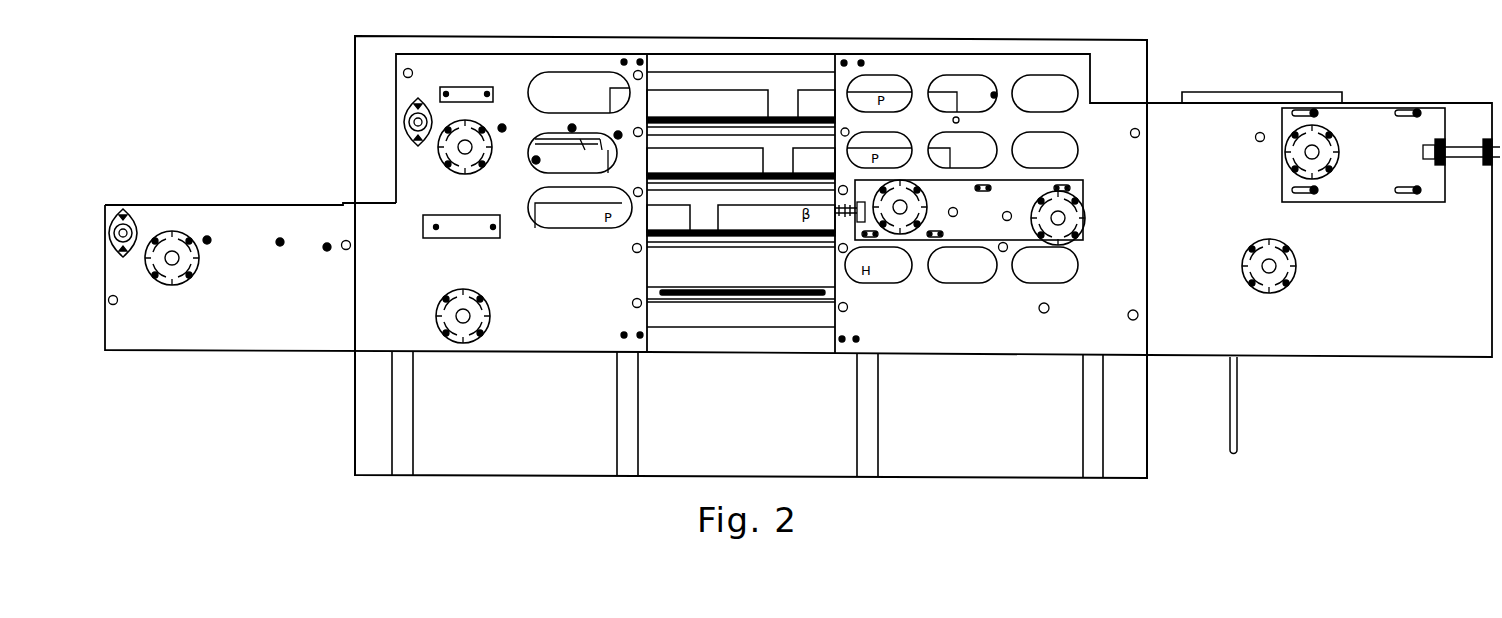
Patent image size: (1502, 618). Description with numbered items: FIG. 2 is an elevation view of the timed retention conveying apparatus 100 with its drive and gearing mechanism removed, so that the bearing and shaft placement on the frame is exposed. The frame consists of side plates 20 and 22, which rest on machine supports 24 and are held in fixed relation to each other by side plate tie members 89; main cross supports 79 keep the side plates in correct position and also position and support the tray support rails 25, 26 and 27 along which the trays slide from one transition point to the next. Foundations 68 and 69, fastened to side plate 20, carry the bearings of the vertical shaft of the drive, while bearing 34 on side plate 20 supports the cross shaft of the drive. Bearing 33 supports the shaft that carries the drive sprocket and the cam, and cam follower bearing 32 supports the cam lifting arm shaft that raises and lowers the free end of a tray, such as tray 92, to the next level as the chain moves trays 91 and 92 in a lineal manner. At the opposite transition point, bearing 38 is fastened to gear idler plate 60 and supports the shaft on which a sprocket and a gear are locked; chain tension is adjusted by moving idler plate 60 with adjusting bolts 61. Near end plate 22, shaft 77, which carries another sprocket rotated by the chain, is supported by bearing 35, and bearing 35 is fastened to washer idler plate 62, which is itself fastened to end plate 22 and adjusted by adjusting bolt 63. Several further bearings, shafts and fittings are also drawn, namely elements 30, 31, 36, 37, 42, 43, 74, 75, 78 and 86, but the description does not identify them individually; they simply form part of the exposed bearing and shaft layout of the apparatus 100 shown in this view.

The packaging machine 100 is at (358, 90).
The side plate 20 is at (798, 205).
The side plate 22 is at (1257, 153).
The machine supports 24 is at (398, 416).
The tray support rail 25 is at (655, 187).
The tray support rail 26 is at (685, 247).
The tray support rail 27 is at (695, 300).
The idler pulley 30 is at (123, 257).
The pulley 31 is at (172, 272).
The cam follower bearing 32 is at (408, 128).
The bearing 33 is at (450, 155).
The bearing 34 is at (442, 325).
The bearing 35 is at (1322, 155).
The pulley 36 is at (1280, 270).
The drive pulley 37 is at (1082, 235).
The bearing 38 is at (918, 218).
The hole 42 is at (1010, 219).
The hole 43 is at (957, 214).
The gear idler plate 60 is at (969, 209).
The adjusting bolts 61 is at (863, 225).
The washer idler plate 62 is at (1363, 155).
The adjusting bolt 63 is at (1455, 155).
The foundation 68 is at (463, 89).
The foundation 69 is at (467, 232).
The pulley shaft 74 is at (130, 226).
The pulley shaft 75 is at (172, 258).
The shaft 77 is at (1305, 155).
The pulley shaft 78 is at (1258, 273).
The main cross supports 79 is at (412, 70).
The guide 86 is at (572, 153).
The side plate tie members 89 is at (741, 203).
The tray 91 is at (1235, 453).
The tray 92 is at (584, 155).